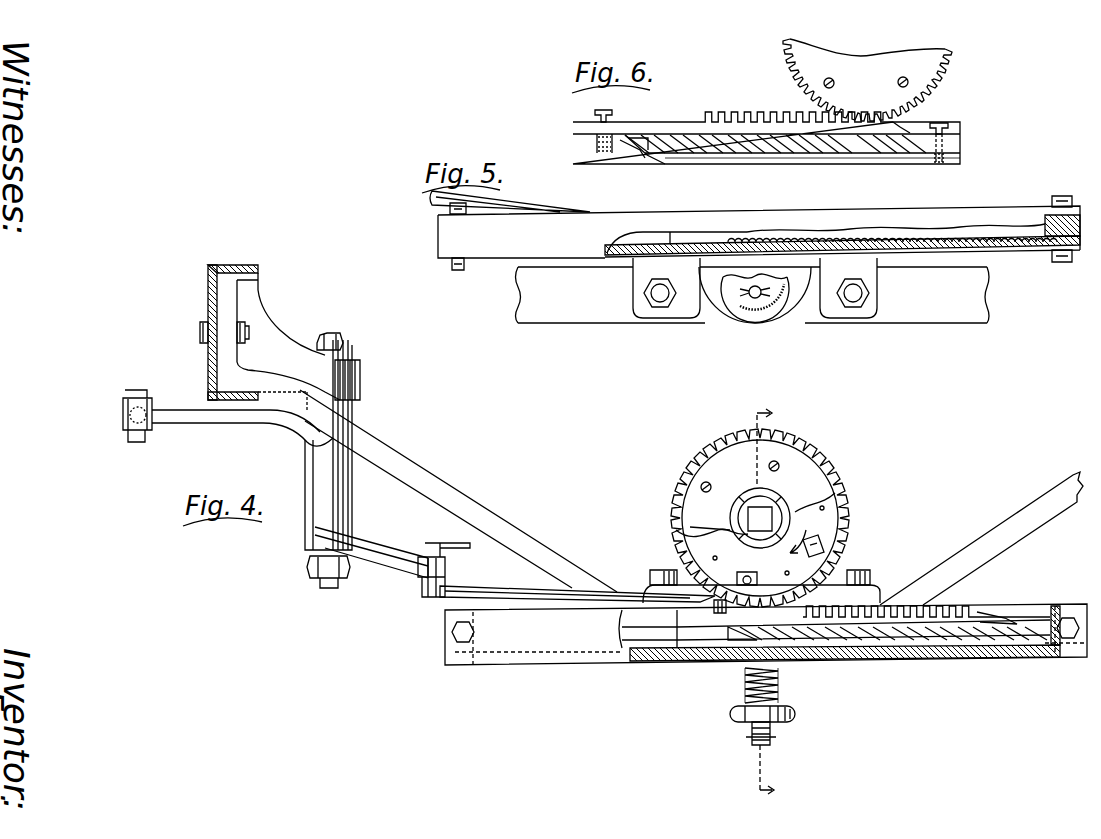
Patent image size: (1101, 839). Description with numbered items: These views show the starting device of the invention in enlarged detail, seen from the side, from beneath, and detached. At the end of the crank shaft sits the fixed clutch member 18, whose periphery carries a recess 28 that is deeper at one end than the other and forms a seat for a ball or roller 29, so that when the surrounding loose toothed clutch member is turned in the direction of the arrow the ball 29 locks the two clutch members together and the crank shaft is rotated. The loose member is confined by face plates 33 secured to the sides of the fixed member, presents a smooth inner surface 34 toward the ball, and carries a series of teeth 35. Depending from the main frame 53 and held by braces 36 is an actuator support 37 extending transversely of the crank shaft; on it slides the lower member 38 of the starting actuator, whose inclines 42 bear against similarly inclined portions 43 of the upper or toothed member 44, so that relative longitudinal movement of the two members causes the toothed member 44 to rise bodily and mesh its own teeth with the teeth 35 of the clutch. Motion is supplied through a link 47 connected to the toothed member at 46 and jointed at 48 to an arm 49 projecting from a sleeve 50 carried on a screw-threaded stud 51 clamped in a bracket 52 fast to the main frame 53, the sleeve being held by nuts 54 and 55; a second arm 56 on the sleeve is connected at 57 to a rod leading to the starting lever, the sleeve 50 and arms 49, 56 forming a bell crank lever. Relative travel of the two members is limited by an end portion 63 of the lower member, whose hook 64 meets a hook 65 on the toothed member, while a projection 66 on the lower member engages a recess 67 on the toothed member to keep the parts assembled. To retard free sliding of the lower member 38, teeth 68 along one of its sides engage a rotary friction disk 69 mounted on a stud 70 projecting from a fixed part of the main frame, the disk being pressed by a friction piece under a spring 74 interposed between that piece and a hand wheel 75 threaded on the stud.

In FIG. 4, the fixed clutch member 18 is at (690, 527).
In FIG. 4, the recess 28 is at (828, 556).
In FIG. 4, the ball or roller 29 is at (757, 565).
In FIG. 4, the face plates 33 is at (820, 473).
In FIG. 4, the inner surface 34 is at (843, 522).
In FIG. 6, the teeth 35 is at (950, 56).
In FIG. 4, the braces 36 is at (458, 498).
In FIG. 6, the actuator support 37 is at (766, 143).
In FIG. 5, the actuator support 37 is at (759, 266).
In FIG. 4, the actuator support 37 is at (960, 660).
In FIG. 6, the lower member of the actuator 38 is at (870, 160).
In FIG. 5, the lower member of the actuator 38 is at (1018, 232).
In FIG. 4, the lower member of the actuator 38 is at (876, 658).
In FIG. 6, the inclines 42 is at (741, 153).
In FIG. 4, the inclines 42 is at (830, 648).
In FIG. 6, the inclined portions 43 is at (767, 135).
In FIG. 4, the inclined portions 43 is at (940, 628).
In FIG. 6, the upper member of the actuator 44 is at (742, 124).
In FIG. 4, the upper member of the actuator 44 is at (888, 610).
In FIG. 6, the connection 46 is at (608, 116).
In FIG. 4, the connection 46 is at (716, 614).
In FIG. 5, the link 47 is at (536, 210).
In FIG. 4, the link 47 is at (516, 597).
In FIG. 4, the joint 48 is at (420, 605).
In FIG. 4, the arm 49 is at (368, 580).
In FIG. 4, the sleeve 50 is at (318, 515).
In FIG. 4, the stud 51 is at (332, 334).
In FIG. 4, the bracket 52 is at (283, 332).
In FIG. 4, the main frame 53 is at (208, 268).
In FIG. 4, the nut 54 is at (360, 360).
In FIG. 4, the nut 55 is at (310, 576).
In FIG. 4, the arm 56 is at (203, 412).
In FIG. 4, the connection 57 is at (123, 416).
In FIG. 6, the end portion 63 is at (935, 124).
In FIG. 6, the hook or projection 64 is at (895, 122).
In FIG. 6, the hook or projection 65 is at (902, 128).
In FIG. 6, the projection 66 is at (652, 143).
In FIG. 6, the recess 67 is at (640, 158).
In FIG. 5, the teeth 68 is at (930, 240).
In FIG. 5, the rotary friction disk 69 is at (753, 257).
In FIG. 5, the stud 70 is at (752, 300).
In FIG. 4, the stud 70 is at (770, 731).
In FIG. 4, the spring 74 is at (745, 687).
In FIG. 4, the hand wheel 75 is at (731, 713).